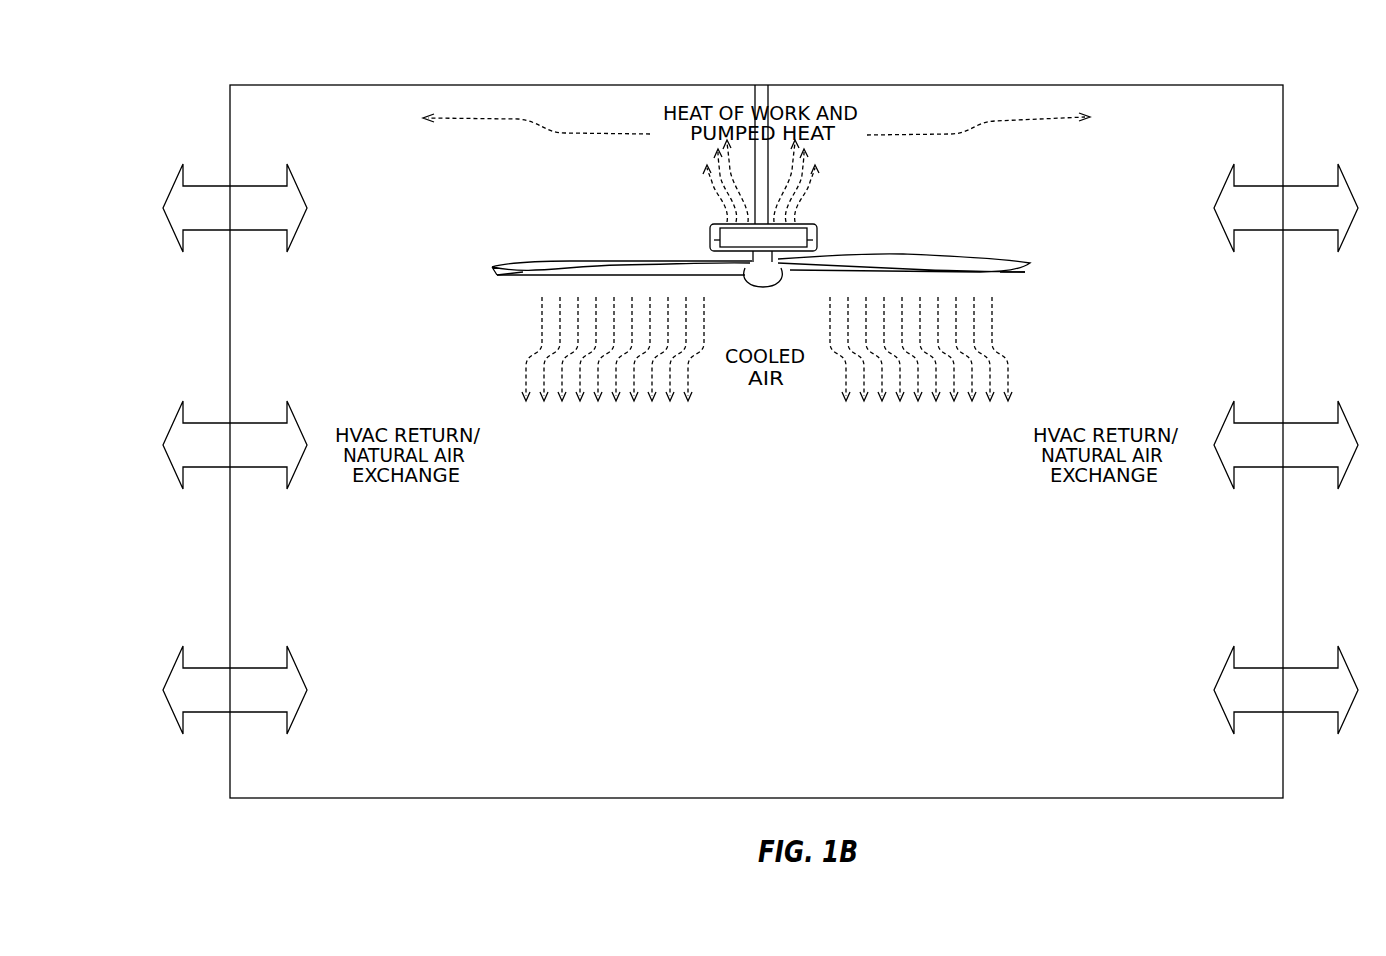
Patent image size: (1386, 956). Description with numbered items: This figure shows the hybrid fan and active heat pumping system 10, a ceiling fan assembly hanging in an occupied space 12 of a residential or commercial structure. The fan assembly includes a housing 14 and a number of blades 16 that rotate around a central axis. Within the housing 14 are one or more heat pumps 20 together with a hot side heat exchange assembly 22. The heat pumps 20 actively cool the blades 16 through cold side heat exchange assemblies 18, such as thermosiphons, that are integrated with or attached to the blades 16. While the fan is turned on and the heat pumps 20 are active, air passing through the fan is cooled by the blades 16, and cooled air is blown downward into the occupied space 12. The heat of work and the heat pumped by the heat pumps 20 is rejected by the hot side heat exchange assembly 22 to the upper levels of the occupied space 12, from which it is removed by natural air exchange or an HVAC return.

The hybrid fan and active heat pumping system 10 is at (928, 178).
The occupied space 12 is at (1170, 117).
The housing 14 is at (817, 238).
The blades 16 is at (532, 262).
The cold side heat exchange assemblies 18 is at (523, 272).
The heat pump(s) 20 is at (718, 237).
The hot side heat exchange assembly 22 is at (726, 222).